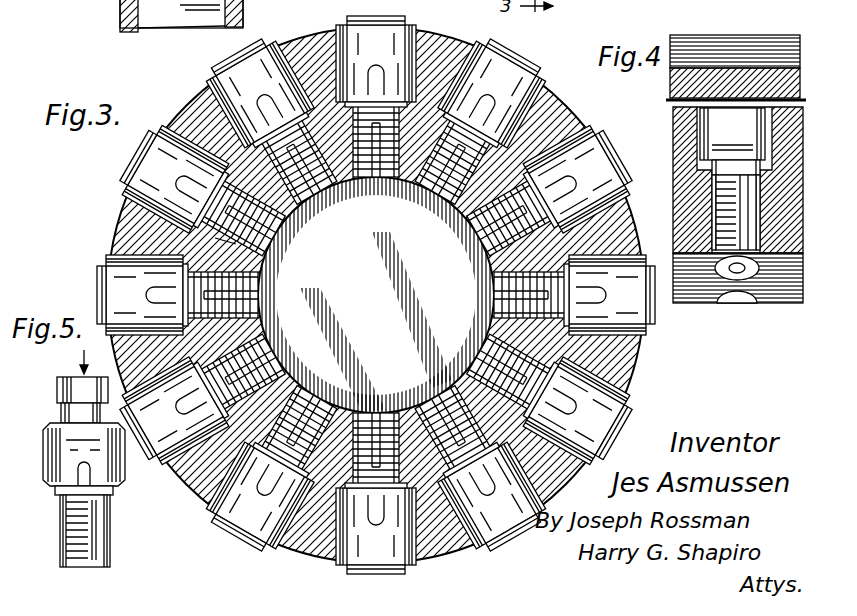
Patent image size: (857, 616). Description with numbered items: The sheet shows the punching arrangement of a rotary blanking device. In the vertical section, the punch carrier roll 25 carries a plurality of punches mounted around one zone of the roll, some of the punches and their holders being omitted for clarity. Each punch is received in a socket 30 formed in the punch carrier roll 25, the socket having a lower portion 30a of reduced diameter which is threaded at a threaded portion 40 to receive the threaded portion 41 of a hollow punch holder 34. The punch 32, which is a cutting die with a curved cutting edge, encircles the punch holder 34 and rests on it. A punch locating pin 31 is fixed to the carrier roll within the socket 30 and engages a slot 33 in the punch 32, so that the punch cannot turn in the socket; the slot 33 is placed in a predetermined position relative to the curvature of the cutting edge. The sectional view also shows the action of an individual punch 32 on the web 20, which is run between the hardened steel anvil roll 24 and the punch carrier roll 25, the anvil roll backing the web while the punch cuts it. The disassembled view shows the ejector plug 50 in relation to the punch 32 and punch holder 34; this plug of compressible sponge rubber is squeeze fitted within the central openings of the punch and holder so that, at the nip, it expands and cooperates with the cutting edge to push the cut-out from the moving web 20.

In FIG. 4, the web 20 is at (672, 99).
In FIG. 4, the anvil roll 24 is at (686, 80).
In FIG. 3, the punch carrier roll 25 is at (310, 38).
In FIG. 4, the punch carrier roll 25 is at (690, 118).
In FIG. 3, the socket 30 is at (170, 140).
In FIG. 4, the socket 30 is at (696, 173).
In FIG. 3, the lower portion of the socket 30a is at (292, 548).
In FIG. 3, the punch locating pin 31 is at (178, 183).
In FIG. 4, the punch locating pin 31 is at (706, 153).
In FIG. 3, the punch 32 is at (634, 330).
In FIG. 4, the punch 32 is at (700, 135).
In FIG. 5, the punch 32 is at (48, 443).
In FIG. 3, the slot 33 is at (207, 80).
In FIG. 5, the slot 33 is at (92, 474).
In FIG. 4, the punch holder 34 is at (696, 186).
In FIG. 5, the punch holder 34 is at (56, 492).
In FIG. 3, the threaded portion of the socket 40 is at (215, 238).
In FIG. 3, the threaded portion of the punch holder 41 is at (604, 360).
In FIG. 4, the threaded portion of the punch holder 41 is at (694, 219).
In FIG. 5, the threaded portion of the punch holder 41 is at (112, 522).
In FIG. 3, the ejector plug 50 is at (392, 18).
In FIG. 5, the ejector plug 50 is at (57, 392).